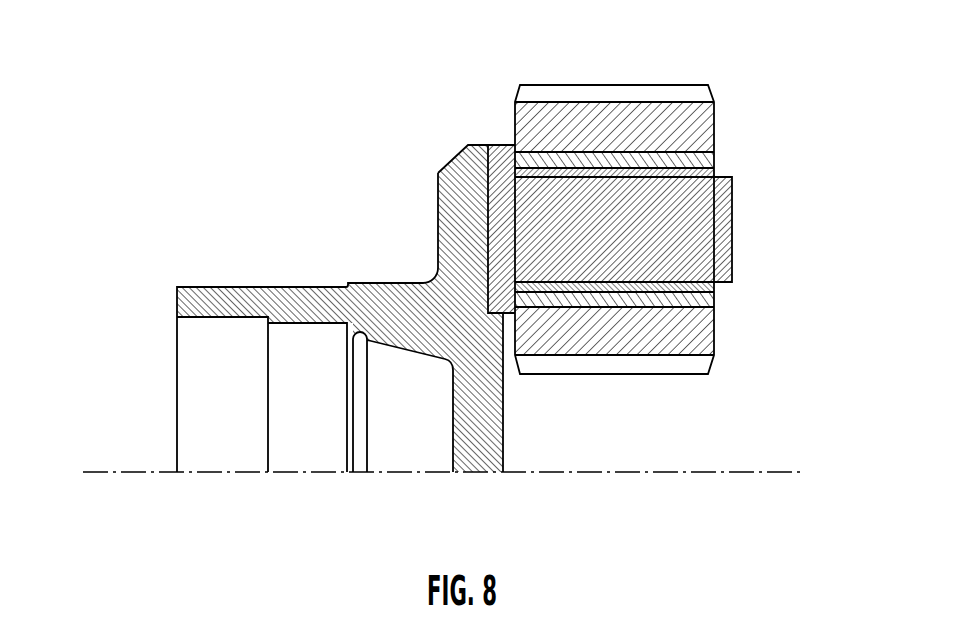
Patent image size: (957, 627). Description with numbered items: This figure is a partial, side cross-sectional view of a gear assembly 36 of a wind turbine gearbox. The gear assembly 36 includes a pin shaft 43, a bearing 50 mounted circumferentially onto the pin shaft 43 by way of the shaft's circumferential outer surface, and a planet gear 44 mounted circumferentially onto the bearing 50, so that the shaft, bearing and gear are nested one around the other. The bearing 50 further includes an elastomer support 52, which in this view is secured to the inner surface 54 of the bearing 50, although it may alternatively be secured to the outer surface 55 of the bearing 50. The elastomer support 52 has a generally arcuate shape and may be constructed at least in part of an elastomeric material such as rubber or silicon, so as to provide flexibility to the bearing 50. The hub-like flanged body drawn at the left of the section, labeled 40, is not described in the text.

The gear assembly 36 is at (666, 223).
The hub 40 is at (437, 208).
The pin shaft 43 is at (670, 220).
The planet gear 44 is at (563, 82).
The bearing 50 is at (598, 148).
The elastomer support 52 is at (722, 286).
The inner surface 54 is at (618, 188).
The outer surface 55 is at (667, 310).